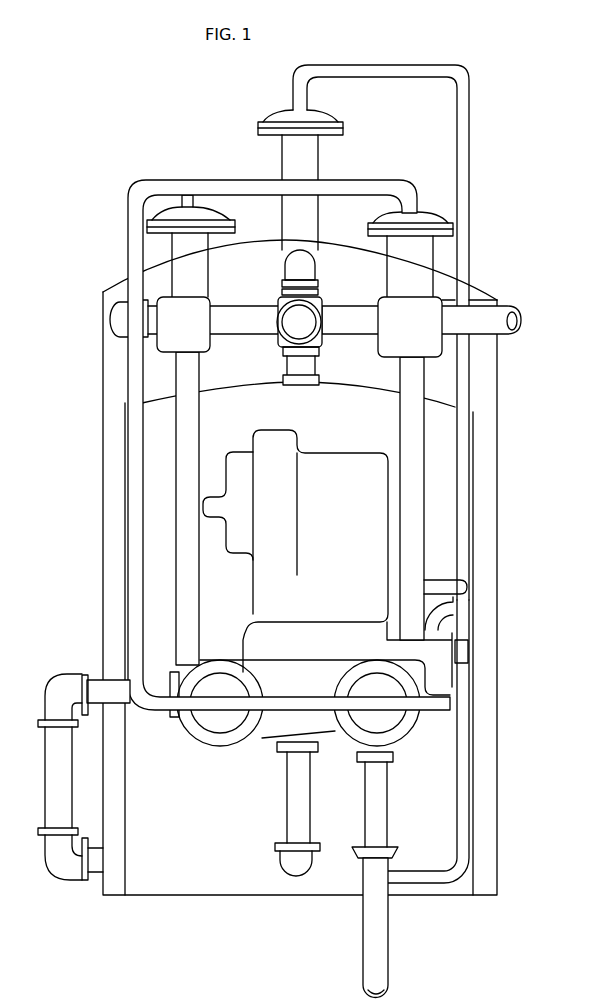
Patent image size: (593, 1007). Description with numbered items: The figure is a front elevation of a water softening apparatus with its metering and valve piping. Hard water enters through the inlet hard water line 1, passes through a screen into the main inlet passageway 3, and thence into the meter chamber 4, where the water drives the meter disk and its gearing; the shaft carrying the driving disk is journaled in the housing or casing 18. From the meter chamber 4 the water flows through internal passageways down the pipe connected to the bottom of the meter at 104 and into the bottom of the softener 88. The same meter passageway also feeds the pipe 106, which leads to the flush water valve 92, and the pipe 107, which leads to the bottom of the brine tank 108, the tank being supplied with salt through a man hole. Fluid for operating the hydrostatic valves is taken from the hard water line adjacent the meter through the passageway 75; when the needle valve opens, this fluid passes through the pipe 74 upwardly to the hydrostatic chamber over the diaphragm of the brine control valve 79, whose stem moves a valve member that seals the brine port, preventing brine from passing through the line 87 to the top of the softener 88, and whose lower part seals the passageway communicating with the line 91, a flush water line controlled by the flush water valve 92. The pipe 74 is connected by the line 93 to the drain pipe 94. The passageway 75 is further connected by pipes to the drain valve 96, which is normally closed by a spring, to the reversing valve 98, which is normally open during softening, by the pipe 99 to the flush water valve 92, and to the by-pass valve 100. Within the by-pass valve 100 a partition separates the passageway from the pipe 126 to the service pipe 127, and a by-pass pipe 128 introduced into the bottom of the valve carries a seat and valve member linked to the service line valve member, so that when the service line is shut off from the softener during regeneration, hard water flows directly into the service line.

The inlet hard water line 1 is at (458, 677).
The main inlet passageway 3 is at (398, 655).
The meter chamber 4 is at (272, 726).
The housing or casing 18 is at (324, 462).
The pipe 74 is at (463, 495).
The passageway 75 is at (138, 444).
The brine control valve 79 is at (316, 158).
The line 87 is at (303, 266).
The softener 88 is at (245, 392).
The line 91 is at (243, 328).
The flush water valve 92 is at (205, 270).
The line 93 is at (457, 793).
The drain pipe 94 is at (388, 948).
The drain valve 96 is at (408, 733).
The reversing valve 98 is at (198, 729).
The pipe 99 is at (196, 203).
The by-pass valve 100 is at (405, 274).
The pipe connection at bottom of meter 104 is at (292, 792).
The pipe 106 is at (190, 555).
The pipe 107 is at (100, 678).
The brine tank 108 is at (107, 380).
The pipe 126 is at (352, 331).
The service pipe 127 is at (505, 335).
The by-pass pipe 128 is at (405, 433).